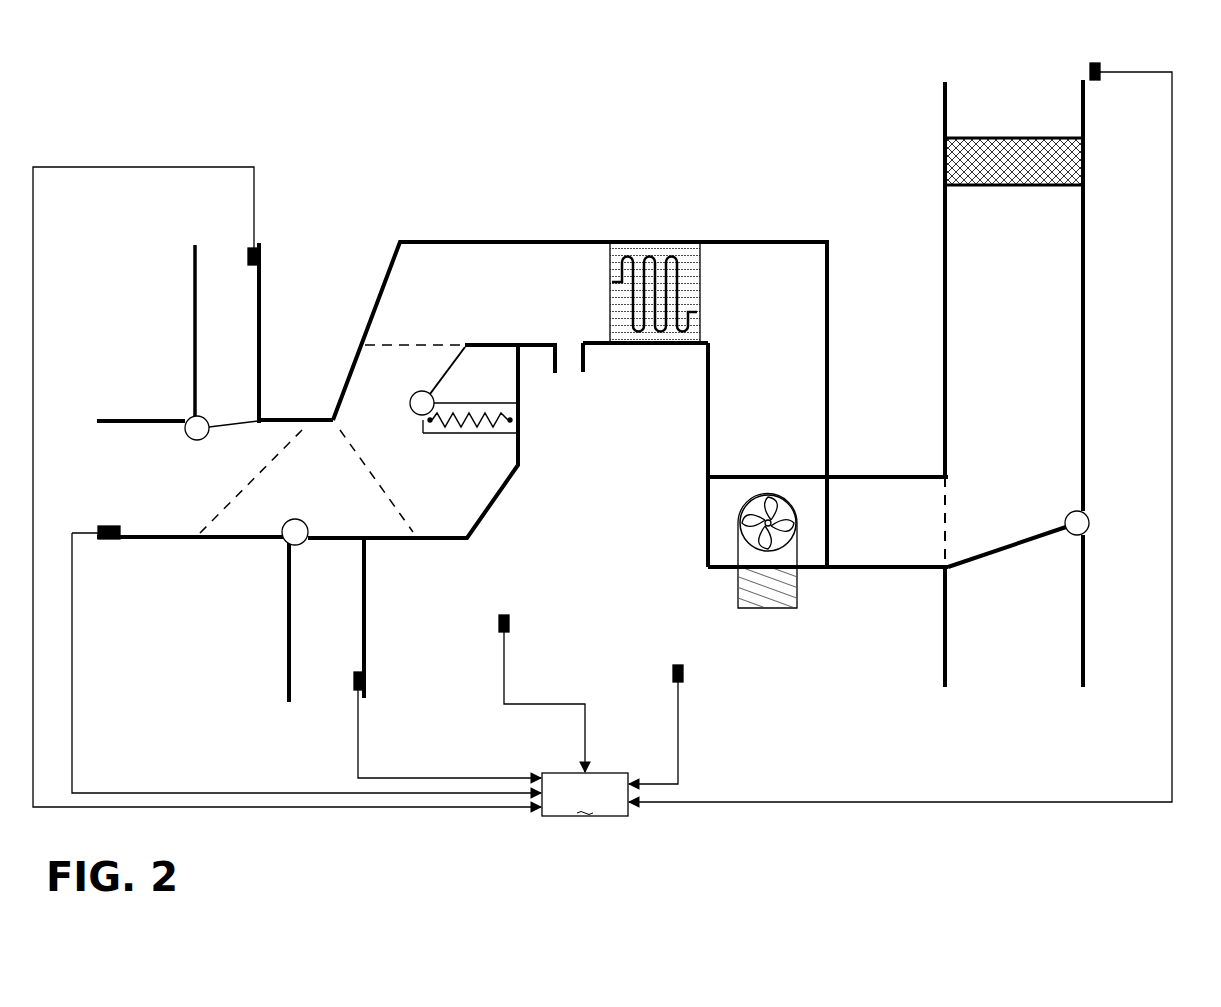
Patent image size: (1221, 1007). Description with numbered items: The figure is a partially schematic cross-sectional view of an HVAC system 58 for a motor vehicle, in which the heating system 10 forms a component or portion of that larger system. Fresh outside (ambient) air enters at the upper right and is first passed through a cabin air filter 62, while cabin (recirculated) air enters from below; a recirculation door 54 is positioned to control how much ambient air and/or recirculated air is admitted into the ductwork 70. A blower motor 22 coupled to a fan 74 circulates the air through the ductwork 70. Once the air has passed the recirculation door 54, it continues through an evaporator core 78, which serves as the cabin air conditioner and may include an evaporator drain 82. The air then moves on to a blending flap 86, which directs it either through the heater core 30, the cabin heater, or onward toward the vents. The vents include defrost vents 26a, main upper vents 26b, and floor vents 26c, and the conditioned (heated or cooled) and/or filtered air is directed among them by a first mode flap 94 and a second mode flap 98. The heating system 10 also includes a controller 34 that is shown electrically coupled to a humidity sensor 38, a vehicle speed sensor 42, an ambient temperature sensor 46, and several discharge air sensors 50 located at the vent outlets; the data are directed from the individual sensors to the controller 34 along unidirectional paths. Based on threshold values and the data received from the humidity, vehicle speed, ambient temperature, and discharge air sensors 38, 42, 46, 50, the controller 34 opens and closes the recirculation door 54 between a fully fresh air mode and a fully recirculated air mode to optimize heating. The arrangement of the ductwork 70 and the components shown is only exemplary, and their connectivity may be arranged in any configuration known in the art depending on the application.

The heating system 10 is at (728, 826).
The blower motor 22 is at (757, 583).
The defrost vents 26a is at (228, 272).
The main upper vents 26b is at (125, 475).
The floor vents 26c is at (337, 672).
The heater core 30 is at (497, 427).
The controller 34 is at (330, 491).
The humidity sensor 38 is at (671, 672).
The vehicle speed sensor 42 is at (510, 620).
The ambient temperature sensor 46 is at (1098, 63).
The discharge air sensor 50 is at (250, 263).
The recirculation door 54 is at (1090, 525).
The HVAC system 58 is at (297, 182).
The cabin air filter 62 is at (1063, 163).
The ductwork 70 is at (1020, 370).
The fan 74 is at (740, 525).
The evaporator core 78 is at (643, 255).
The evaporator drain 82 is at (573, 380).
The blending flap 86 is at (420, 403).
The first mode flap 94 is at (195, 432).
The second mode flap 98 is at (285, 524).